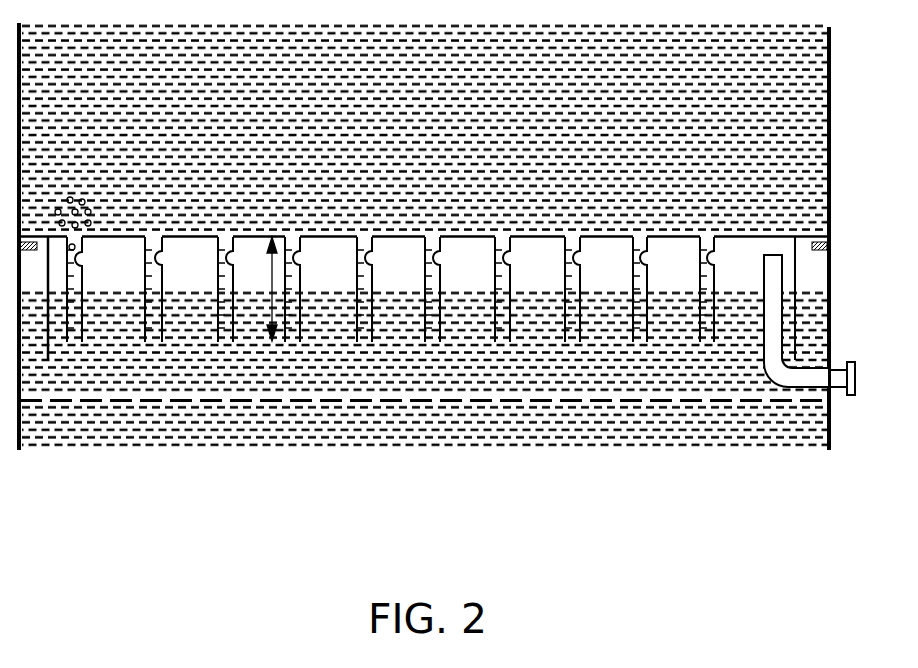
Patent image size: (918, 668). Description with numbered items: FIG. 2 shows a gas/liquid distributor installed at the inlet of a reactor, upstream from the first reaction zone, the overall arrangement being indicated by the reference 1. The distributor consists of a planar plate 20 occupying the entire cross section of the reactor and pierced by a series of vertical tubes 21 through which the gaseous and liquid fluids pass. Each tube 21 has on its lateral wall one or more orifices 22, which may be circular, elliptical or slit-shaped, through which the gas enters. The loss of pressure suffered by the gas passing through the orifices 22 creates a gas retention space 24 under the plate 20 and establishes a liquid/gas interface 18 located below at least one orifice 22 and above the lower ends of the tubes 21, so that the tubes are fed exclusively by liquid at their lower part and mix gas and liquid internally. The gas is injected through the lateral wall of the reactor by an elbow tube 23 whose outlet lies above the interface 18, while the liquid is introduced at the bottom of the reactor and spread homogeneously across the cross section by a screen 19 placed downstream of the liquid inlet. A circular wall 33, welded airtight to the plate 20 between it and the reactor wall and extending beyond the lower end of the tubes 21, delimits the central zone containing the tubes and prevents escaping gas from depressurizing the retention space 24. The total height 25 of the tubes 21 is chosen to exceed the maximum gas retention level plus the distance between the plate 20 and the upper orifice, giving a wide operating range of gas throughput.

The apparatus 1 is at (748, 467).
The liquid/gas interface 18 is at (393, 292).
The screen 19 is at (515, 400).
The planar plate 20 is at (773, 233).
The vertical tubes 21 is at (145, 328).
The orifices 22 is at (164, 259).
The elbow tube 23 is at (770, 350).
The gas retention space 24 is at (607, 263).
The total height of tubes 25 is at (268, 310).
The circular wall 33 is at (797, 323).